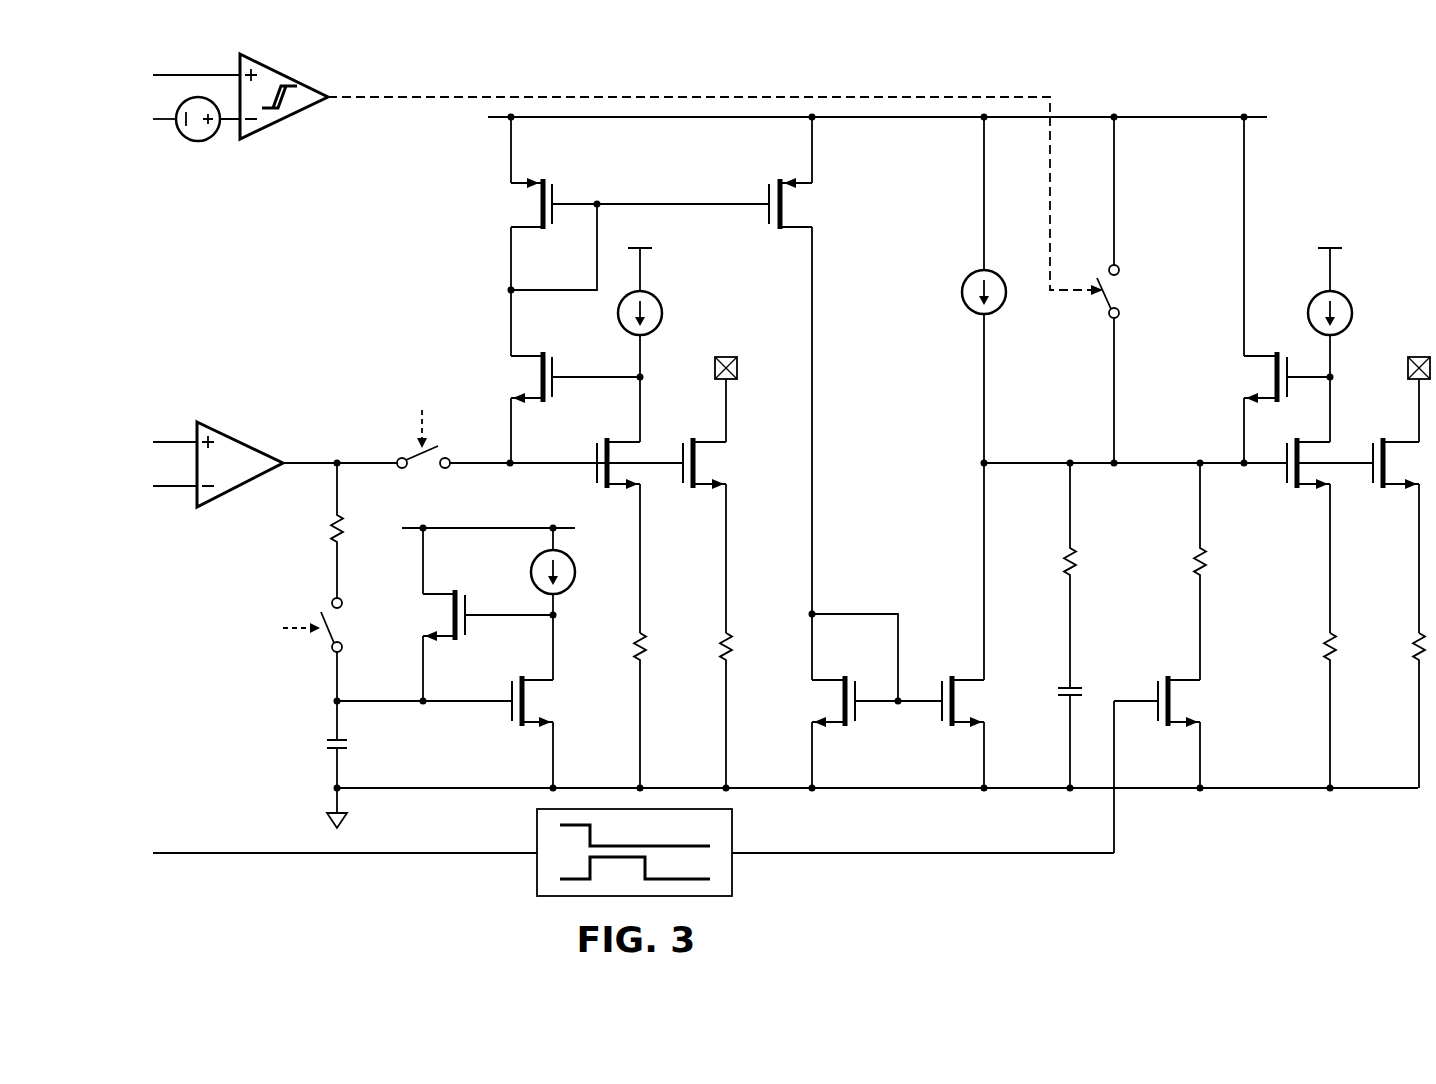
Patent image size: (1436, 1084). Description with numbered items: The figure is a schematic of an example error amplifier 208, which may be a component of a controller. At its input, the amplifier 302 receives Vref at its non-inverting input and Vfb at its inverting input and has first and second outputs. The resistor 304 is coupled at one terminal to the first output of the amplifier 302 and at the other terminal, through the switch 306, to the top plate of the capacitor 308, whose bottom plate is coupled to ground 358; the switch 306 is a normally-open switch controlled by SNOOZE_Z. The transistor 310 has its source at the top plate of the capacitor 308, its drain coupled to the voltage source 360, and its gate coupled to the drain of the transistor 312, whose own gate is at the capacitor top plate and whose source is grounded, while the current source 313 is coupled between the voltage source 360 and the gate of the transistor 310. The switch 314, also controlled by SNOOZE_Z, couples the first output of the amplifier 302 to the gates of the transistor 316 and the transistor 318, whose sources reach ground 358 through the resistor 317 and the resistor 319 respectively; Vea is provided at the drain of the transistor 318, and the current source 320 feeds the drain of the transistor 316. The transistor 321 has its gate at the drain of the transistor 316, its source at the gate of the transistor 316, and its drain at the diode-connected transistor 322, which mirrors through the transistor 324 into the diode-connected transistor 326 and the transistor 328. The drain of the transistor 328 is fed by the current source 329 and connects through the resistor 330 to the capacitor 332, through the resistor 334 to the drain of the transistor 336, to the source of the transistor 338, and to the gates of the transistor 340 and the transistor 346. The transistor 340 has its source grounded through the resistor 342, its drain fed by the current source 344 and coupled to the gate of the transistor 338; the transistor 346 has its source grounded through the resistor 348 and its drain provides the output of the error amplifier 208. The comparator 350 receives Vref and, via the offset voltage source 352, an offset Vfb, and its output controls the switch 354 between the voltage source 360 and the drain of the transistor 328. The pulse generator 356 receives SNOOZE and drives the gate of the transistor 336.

The error amplifier 208 is at (1340, 173).
The amplifier 302 is at (255, 441).
The resistor 304 is at (330, 530).
The switch 306 is at (345, 644).
The capacitor 308 is at (322, 742).
The transistor 310 is at (471, 640).
The transistor 312 is at (497, 717).
The current source 313 is at (542, 560).
The switch 314 is at (407, 471).
The transistor 316 is at (588, 444).
The resistor 317 is at (635, 646).
The transistor 318 is at (674, 444).
The resistor 319 is at (720, 646).
The current source 320 is at (659, 302).
The transistor 321 is at (560, 365).
The transistor 322 is at (560, 193).
The transistor 324 is at (760, 193).
The transistor 326 is at (849, 717).
The transistor 328 is at (946, 717).
The current source 329 is at (962, 288).
The resistor 330 is at (1080, 562).
The capacitor 332 is at (1058, 690).
The resistor 334 is at (1210, 562).
The transistor 336 is at (1148, 717).
The transistor 338 is at (1287, 358).
The transistor 340 is at (1284, 487).
The resistor 342 is at (1325, 646).
The current source 344 is at (1353, 302).
The transistor 346 is at (1369, 487).
The resistor 348 is at (1413, 646).
The comparator 350 is at (291, 113).
The offset voltage source 352 is at (194, 141).
The switch 354 is at (1121, 310).
The pulse generator 356 is at (535, 860).
The ground 358 is at (327, 823).
The voltage source 360 is at (1178, 117).